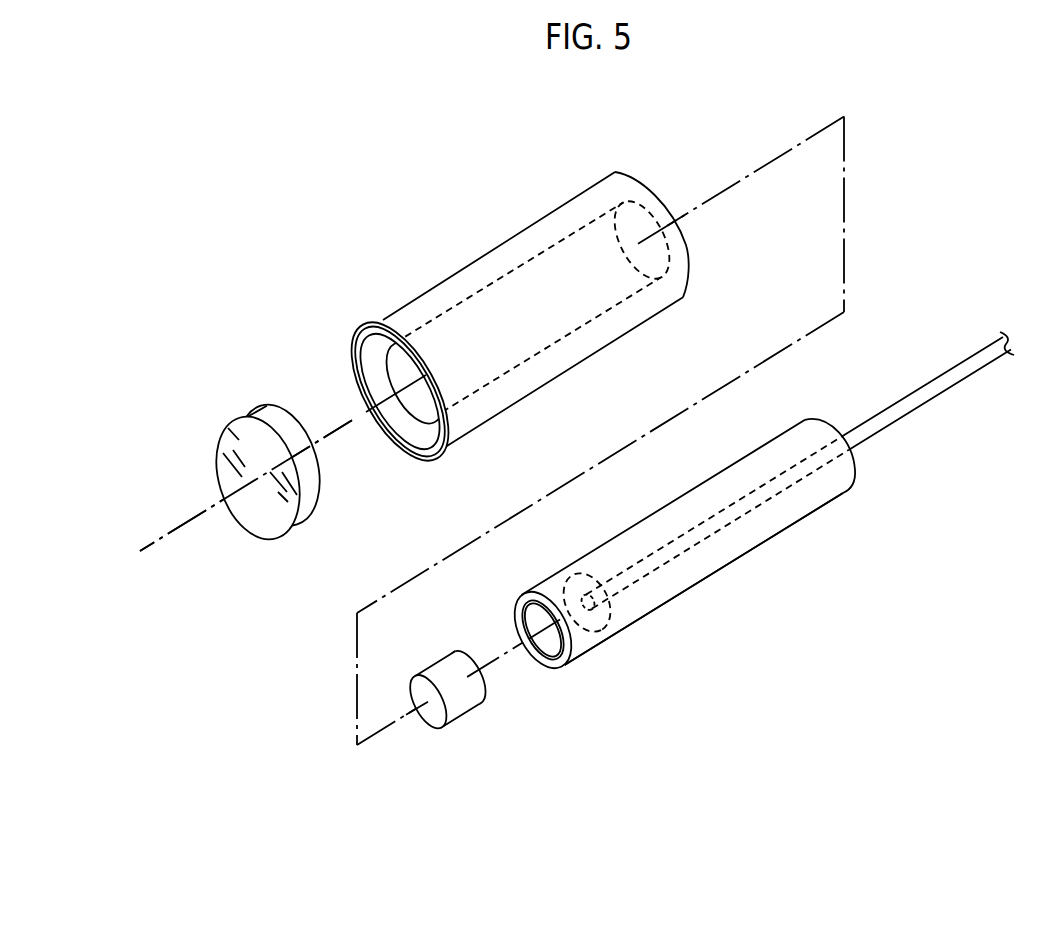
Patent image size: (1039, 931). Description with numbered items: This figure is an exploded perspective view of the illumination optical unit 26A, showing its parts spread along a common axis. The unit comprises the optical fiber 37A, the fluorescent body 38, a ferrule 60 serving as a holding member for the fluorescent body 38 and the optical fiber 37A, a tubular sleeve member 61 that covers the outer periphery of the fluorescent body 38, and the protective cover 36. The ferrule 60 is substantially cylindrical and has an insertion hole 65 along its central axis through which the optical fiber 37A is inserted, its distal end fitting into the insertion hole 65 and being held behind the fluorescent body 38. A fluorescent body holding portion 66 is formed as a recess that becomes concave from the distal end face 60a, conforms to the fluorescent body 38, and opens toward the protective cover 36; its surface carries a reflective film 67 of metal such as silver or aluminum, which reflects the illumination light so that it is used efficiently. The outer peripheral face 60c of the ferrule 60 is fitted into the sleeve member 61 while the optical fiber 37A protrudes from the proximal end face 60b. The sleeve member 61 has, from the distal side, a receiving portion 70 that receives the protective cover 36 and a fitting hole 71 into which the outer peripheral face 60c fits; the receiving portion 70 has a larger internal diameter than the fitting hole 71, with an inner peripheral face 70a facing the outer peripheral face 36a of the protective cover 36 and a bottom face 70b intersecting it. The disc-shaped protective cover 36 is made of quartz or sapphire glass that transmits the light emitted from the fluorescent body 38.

The illumination optical unit 26A is at (142, 231).
The protective cover 36 is at (243, 419).
The outer peripheral face of the protective cover 36a is at (312, 514).
The optical fiber 37A is at (910, 404).
The fluorescent body 38 is at (460, 692).
The ferrule 60 is at (738, 580).
The distal end face of the ferrule 60a is at (518, 604).
The proximal end face of the ferrule 60b is at (816, 418).
The outer peripheral face of the ferrule 60c is at (780, 520).
The sleeve member 61 is at (484, 270).
The insertion hole 65 is at (748, 495).
The fluorescent body holding portion 66 is at (610, 630).
The reflective film 67 is at (550, 648).
The receiving portion 70 is at (350, 234).
The inner peripheral face of the receiving portion 70a is at (366, 378).
The bottom face of the receiving portion 70b is at (385, 345).
The fitting hole 71 is at (669, 259).